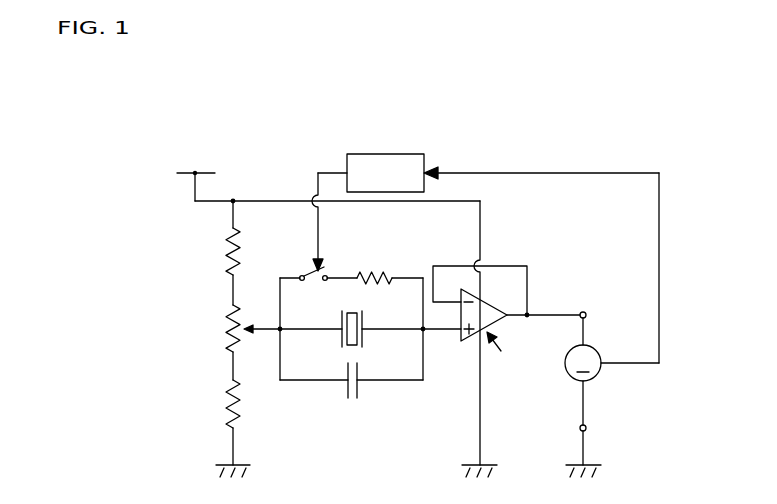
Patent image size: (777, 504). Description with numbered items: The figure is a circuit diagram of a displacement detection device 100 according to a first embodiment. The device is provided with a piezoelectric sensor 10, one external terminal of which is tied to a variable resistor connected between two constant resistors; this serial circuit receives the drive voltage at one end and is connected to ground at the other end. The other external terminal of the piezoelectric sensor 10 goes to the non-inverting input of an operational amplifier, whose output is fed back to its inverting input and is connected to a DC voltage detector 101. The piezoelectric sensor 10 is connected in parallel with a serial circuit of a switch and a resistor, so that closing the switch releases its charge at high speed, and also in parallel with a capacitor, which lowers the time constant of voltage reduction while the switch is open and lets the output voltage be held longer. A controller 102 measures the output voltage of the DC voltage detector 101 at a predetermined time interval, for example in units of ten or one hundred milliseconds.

The displacement detection device 100 is at (604, 119).
The DC voltage detector 101 is at (603, 353).
The controller 102 is at (416, 154).
The piezoelectric sensor 10 is at (338, 337).